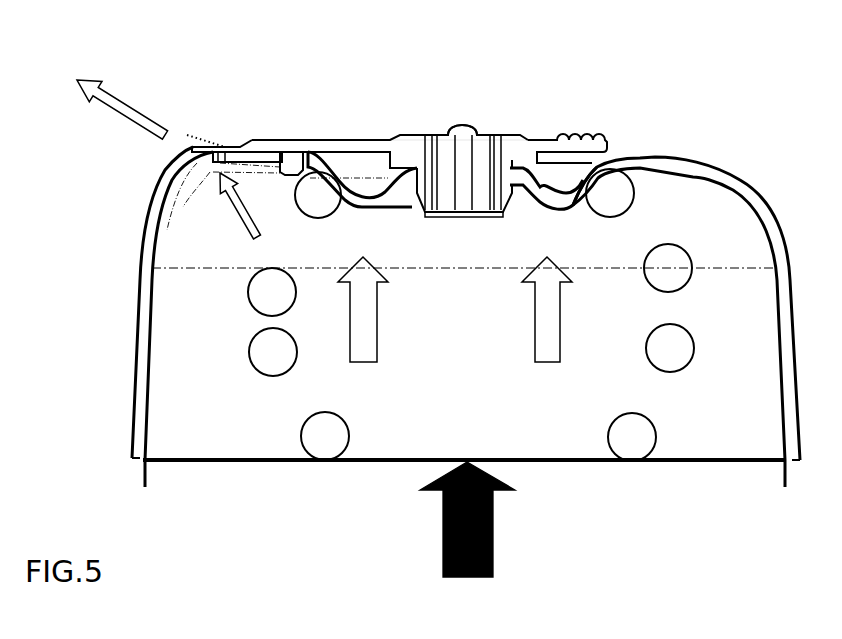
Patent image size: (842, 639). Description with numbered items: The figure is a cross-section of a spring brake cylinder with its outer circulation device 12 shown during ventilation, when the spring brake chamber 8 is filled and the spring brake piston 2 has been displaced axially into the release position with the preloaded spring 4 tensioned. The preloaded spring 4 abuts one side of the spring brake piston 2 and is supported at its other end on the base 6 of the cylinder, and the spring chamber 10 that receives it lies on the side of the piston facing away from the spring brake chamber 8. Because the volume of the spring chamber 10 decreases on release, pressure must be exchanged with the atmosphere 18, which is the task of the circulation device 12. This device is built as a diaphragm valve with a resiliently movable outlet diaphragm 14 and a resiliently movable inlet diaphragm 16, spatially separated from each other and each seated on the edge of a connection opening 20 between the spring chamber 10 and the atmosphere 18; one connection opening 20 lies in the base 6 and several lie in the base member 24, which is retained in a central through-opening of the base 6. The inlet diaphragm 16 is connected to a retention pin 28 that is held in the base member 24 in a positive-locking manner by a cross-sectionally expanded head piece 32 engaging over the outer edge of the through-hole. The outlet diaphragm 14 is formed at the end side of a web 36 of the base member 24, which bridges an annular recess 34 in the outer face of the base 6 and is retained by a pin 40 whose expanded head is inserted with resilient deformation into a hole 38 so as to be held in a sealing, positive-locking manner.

The spring brake piston 2 is at (722, 463).
The preloaded spring 4 is at (680, 350).
The base 6 is at (640, 167).
The spring brake chamber 8 is at (553, 518).
The spring chamber 10 is at (733, 223).
The outer circulation device 12 is at (548, 60).
The outlet diaphragm 14 is at (197, 135).
The inlet diaphragm 16 is at (433, 212).
The atmosphere 18 is at (394, 170).
The connection opening 20 is at (433, 138).
The base member 24 is at (528, 145).
The retention pin 28 is at (461, 195).
The head piece 32 is at (462, 130).
The annular recess 34 is at (367, 170).
The web 36 is at (333, 143).
The hole 38 is at (290, 128).
The pin 40 is at (293, 170).